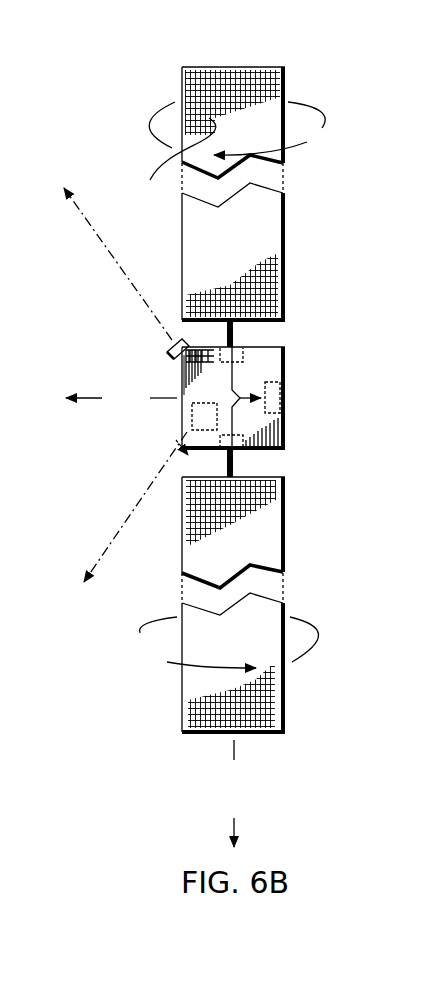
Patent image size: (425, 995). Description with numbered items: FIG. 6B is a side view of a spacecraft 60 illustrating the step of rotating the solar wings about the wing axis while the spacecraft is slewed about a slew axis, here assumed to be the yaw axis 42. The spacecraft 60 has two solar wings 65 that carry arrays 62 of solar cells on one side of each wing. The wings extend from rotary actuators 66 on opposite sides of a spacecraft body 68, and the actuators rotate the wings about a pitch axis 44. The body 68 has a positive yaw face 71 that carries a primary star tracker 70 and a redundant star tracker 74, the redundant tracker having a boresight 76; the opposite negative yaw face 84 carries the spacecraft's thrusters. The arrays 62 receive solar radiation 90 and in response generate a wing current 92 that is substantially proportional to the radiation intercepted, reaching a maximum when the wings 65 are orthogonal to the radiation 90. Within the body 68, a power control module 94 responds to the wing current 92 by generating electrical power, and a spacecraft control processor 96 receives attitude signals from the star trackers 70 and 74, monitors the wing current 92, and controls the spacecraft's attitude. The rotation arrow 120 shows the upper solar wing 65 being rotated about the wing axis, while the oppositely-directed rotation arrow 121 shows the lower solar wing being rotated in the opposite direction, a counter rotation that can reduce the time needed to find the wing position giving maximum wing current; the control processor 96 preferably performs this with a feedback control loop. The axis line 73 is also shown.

The spacecraft 60 is at (333, 299).
The arrays of solar cells 62 is at (177, 157).
The solar wings 65 is at (194, 396).
The rotary actuators 66 is at (244, 354).
The spacecraft body 68 is at (283, 456).
The primary star tracker 70 is at (180, 443).
The positive yaw face 71 is at (178, 380).
The axis line 73 is at (135, 507).
The redundant star tracker 74 is at (172, 338).
The boresight 76 is at (118, 264).
The negative yaw face 84 is at (290, 443).
The solar radiation 90 is at (189, 90).
The wing current 92 is at (250, 357).
The power control module 94 is at (278, 382).
The spacecraft control processor 96 is at (192, 418).
The rotation arrow 120 is at (248, 128).
The oppositely-directed rotation arrow 121 is at (223, 642).
The yaw axis 42 is at (121, 398).
The pitch axis 44 is at (233, 793).